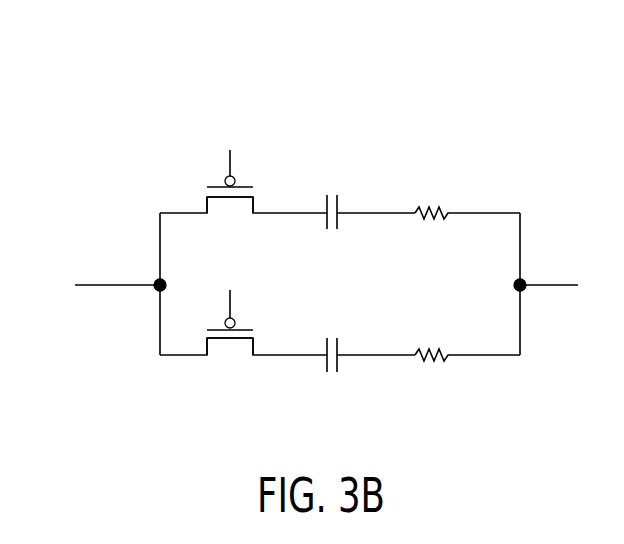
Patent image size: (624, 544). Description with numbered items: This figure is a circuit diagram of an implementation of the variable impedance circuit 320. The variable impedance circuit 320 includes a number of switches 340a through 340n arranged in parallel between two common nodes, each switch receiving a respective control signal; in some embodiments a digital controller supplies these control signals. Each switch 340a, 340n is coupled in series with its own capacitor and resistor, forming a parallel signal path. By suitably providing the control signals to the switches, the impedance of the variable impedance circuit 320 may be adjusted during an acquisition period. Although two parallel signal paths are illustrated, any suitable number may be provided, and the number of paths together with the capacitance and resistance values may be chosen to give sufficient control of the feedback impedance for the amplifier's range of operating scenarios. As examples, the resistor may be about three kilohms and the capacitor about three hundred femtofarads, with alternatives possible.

The variable impedance circuit 320 is at (103, 170).
The switch 340a is at (268, 190).
The switch 340n is at (232, 343).